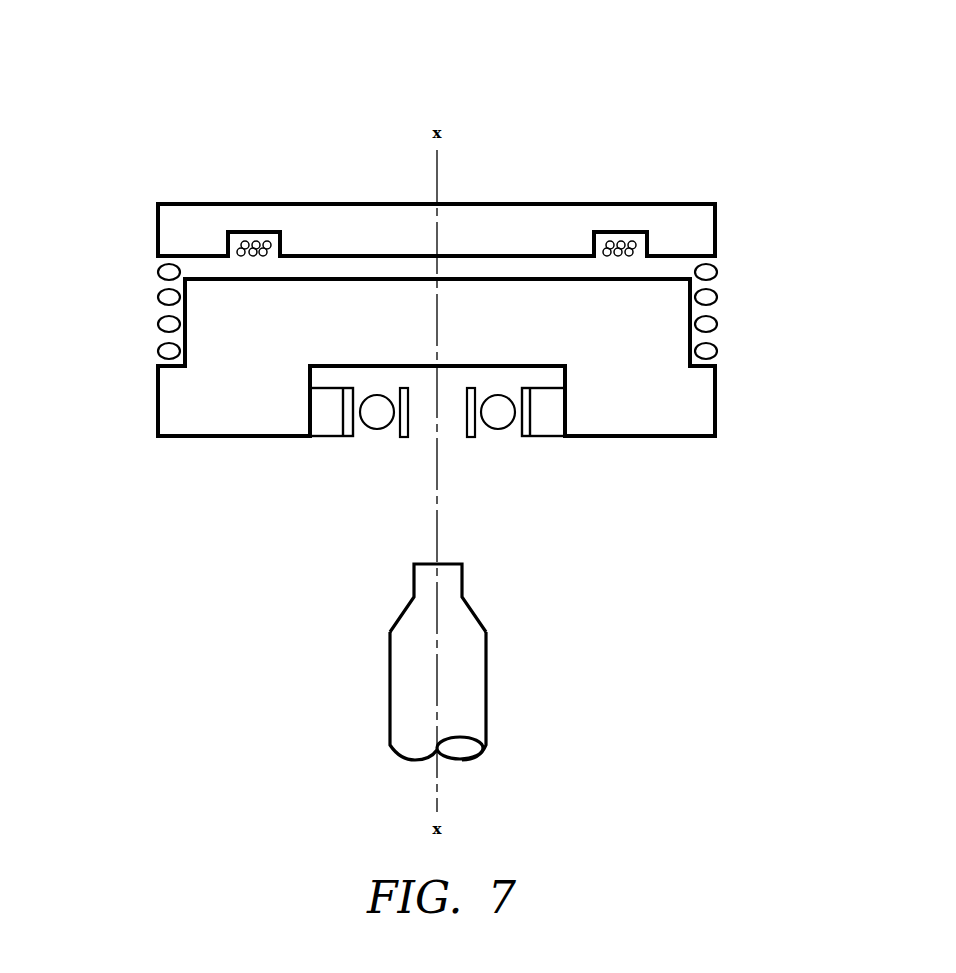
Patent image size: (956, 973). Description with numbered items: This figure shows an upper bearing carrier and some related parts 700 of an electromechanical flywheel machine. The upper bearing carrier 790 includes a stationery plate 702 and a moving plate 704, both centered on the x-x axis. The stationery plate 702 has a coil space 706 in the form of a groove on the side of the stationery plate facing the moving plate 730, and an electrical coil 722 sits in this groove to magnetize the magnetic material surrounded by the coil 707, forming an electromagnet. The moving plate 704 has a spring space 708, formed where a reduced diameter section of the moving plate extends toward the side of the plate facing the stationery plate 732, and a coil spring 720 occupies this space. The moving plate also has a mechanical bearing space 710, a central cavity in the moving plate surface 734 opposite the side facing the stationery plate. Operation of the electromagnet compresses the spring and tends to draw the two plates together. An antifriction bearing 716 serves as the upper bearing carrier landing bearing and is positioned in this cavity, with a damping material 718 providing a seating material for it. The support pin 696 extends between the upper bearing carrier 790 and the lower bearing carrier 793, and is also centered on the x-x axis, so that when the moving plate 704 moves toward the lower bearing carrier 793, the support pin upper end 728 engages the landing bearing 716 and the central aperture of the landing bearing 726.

The upper bearing carrier and related parts 700 is at (436, 221).
The stationery plate 702 is at (700, 237).
The moving plate 704 is at (683, 419).
The coil space 706 is at (236, 243).
The magnetic material surrounded by the coil 707 is at (292, 249).
The spring space 708 is at (163, 353).
The mechanical bearing space 710 is at (316, 369).
The antifriction bearing 716 is at (368, 445).
The damping material 718 is at (316, 403).
The coil spring 720 is at (706, 323).
The electrical coil 722 is at (612, 250).
The central aperture of landing bearing 726 is at (457, 418).
The support pin upper end 728 is at (452, 581).
The side of stationery plate facing the moving plate 730 is at (493, 266).
The side of moving plate facing the stationery plate 732 is at (204, 277).
The moving plate surface opposite the stationery plate 734 is at (608, 437).
The upper bearing carrier 790 is at (207, 447).
The lower bearing carrier 793 is at (709, 533).
The support pin 696 is at (475, 670).